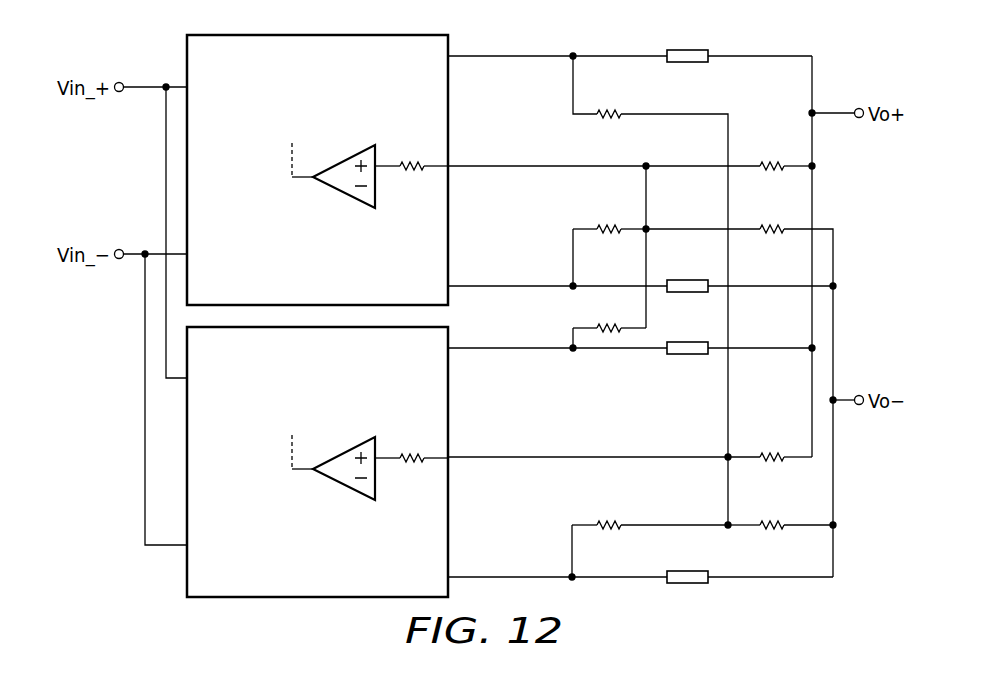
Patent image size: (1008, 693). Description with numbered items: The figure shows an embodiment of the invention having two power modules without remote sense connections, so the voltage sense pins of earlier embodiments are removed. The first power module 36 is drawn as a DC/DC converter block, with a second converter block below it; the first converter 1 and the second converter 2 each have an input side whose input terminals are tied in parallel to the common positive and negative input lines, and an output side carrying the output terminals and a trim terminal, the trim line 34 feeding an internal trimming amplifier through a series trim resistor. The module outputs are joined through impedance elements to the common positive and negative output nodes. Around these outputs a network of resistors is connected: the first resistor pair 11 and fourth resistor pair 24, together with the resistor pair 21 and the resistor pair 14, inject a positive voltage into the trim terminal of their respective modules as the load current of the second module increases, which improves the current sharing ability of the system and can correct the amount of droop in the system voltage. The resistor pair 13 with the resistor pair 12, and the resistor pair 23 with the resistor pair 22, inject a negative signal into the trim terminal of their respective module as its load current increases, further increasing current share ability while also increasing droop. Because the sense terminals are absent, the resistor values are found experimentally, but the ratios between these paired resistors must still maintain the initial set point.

The first power module 36 is at (290, 316).
The trim input 34 is at (631, 299).
The DC/DC converter 1 is at (317, 170).
The DC/DC converter 2 is at (317, 462).
The resistor R11 / impedance Z11 11 is at (630, 276).
The resistor R12 / impedance Z12 12 is at (642, 247).
The resistor R13 13 is at (631, 153).
The resistor R14 14 is at (739, 388).
The resistor R21 / impedance Z21 21 is at (631, 337).
The resistor R22 / impedance Z22 22 is at (640, 551).
The resistor R23 23 is at (630, 444).
The resistor R24 24 is at (782, 512).